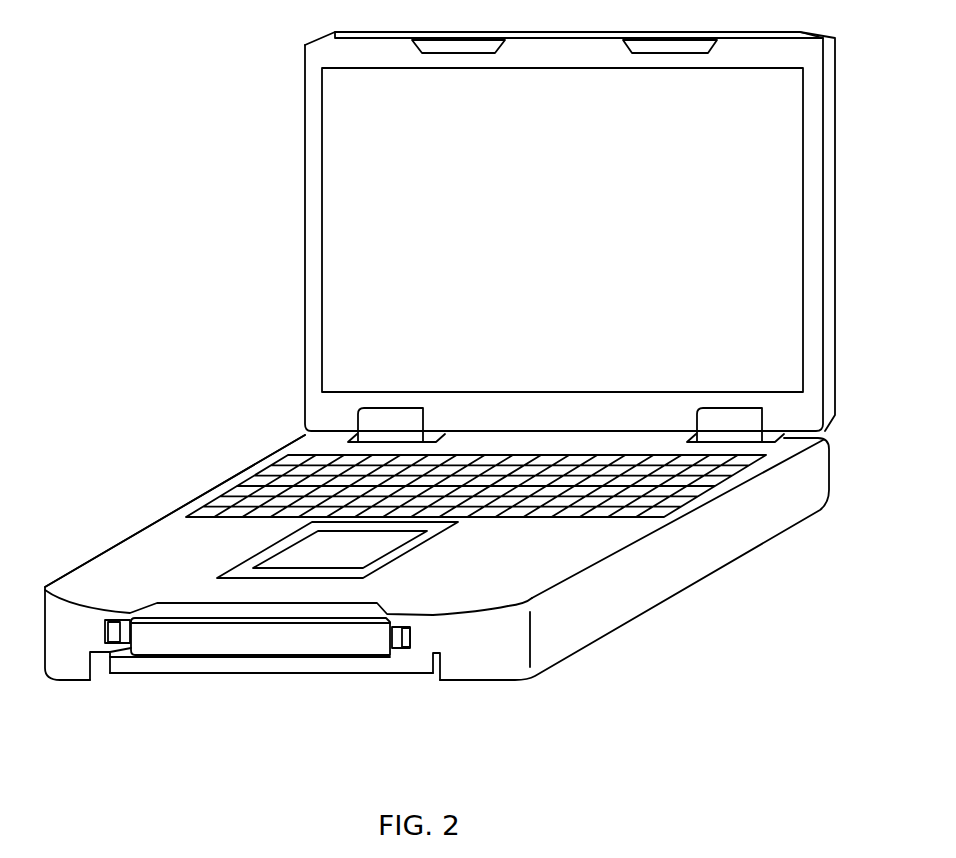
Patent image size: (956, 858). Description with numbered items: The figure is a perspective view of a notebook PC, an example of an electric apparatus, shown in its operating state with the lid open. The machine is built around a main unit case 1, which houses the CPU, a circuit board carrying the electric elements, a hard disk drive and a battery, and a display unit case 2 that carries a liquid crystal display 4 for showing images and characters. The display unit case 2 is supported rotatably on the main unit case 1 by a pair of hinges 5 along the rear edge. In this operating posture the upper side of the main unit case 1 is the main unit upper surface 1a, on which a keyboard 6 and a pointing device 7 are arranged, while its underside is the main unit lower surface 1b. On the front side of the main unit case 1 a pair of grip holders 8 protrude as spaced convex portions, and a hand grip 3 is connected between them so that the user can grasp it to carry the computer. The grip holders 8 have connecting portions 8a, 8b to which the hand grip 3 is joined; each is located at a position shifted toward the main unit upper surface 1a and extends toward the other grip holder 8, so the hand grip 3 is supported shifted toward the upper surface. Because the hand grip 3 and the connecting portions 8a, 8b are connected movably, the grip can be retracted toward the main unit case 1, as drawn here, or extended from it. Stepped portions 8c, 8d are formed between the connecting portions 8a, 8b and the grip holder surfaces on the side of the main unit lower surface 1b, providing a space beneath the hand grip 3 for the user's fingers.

The main unit case 1 is at (633, 592).
The main unit upper surface 1a is at (163, 552).
The main unit lower surface 1b is at (327, 673).
The display unit case 2 is at (305, 226).
The hand grip 3 is at (242, 645).
The liquid crystal display 4 is at (337, 140).
The hinges 5 is at (365, 421).
The keyboard 6 is at (277, 468).
The pointing device 7 is at (317, 553).
The grip holders 8 is at (73, 630).
The connecting portion 8a is at (98, 638).
The connecting portion 8b is at (423, 640).
The stepped portion 8c is at (102, 665).
The stepped portion 8d is at (428, 667).